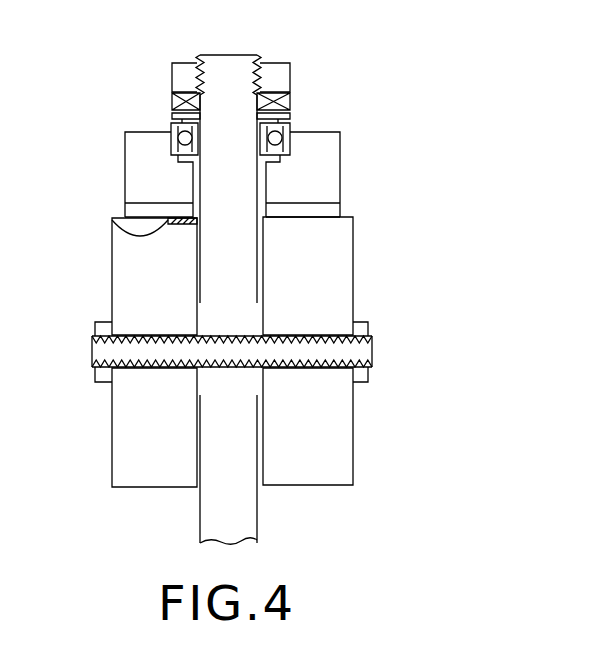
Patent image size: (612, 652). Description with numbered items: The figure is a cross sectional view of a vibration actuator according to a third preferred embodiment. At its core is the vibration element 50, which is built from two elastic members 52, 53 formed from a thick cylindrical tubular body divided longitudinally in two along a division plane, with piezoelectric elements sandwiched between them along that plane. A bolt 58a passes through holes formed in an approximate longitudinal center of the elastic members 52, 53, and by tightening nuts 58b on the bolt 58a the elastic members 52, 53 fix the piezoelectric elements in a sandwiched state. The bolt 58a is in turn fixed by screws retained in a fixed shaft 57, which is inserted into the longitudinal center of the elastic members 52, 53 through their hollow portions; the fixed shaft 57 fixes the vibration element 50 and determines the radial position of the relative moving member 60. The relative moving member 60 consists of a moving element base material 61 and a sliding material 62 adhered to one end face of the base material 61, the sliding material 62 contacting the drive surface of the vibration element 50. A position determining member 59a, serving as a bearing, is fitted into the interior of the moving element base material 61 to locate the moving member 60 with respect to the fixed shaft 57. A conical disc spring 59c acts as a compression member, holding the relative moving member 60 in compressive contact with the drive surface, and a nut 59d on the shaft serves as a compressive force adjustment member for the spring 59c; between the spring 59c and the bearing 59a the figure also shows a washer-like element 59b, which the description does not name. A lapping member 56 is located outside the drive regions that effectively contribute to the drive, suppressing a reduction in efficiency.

The vibration element 50 is at (261, 280).
The elastic member 52 is at (125, 273).
The elastic member 53 is at (343, 257).
The lapping member 56 is at (112, 222).
The fixed shaft 57 is at (247, 517).
The bolt 58a is at (372, 350).
The nuts 58b is at (368, 323).
The position determining member 59a is at (288, 118).
The washer 59b is at (172, 113).
The conical disc spring 59c is at (290, 99).
The nut 59d is at (290, 64).
The relative moving member 60 is at (293, 172).
The moving element base material 61 is at (335, 150).
The sliding material 62 is at (337, 210).